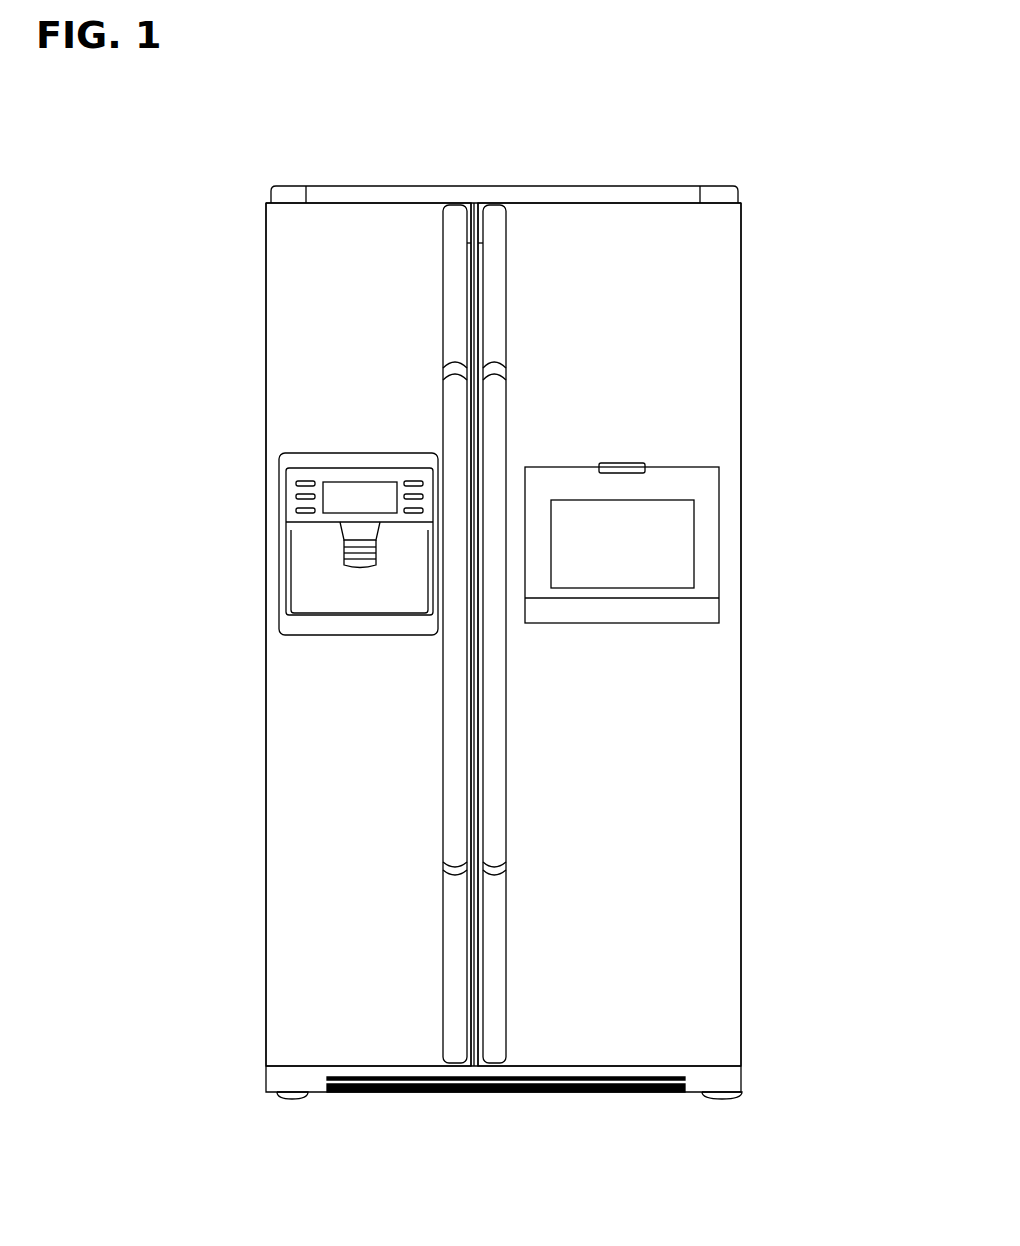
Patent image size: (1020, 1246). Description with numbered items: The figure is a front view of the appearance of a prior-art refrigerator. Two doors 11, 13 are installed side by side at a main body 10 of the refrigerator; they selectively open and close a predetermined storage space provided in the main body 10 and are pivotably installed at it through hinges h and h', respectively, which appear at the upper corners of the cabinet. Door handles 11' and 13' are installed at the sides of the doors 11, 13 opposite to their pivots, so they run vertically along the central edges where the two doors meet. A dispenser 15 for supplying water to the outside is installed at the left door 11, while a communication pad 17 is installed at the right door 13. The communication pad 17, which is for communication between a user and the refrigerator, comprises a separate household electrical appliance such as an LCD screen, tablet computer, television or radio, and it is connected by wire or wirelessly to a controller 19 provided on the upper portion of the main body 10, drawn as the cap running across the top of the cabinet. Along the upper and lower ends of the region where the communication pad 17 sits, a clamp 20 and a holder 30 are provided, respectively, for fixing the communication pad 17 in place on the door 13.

The main body 10 is at (746, 262).
The door 11 is at (305, 634).
The door 13 is at (672, 634).
The door handle 11' is at (319, 634).
The door handle 13' is at (646, 634).
The dispenser 15 is at (300, 566).
The communication pad 17 is at (708, 541).
The controller 19 is at (560, 186).
The clamp 20 is at (645, 465).
The holder 30 is at (705, 612).
The hinge h is at (307, 164).
The hinge h' is at (732, 165).